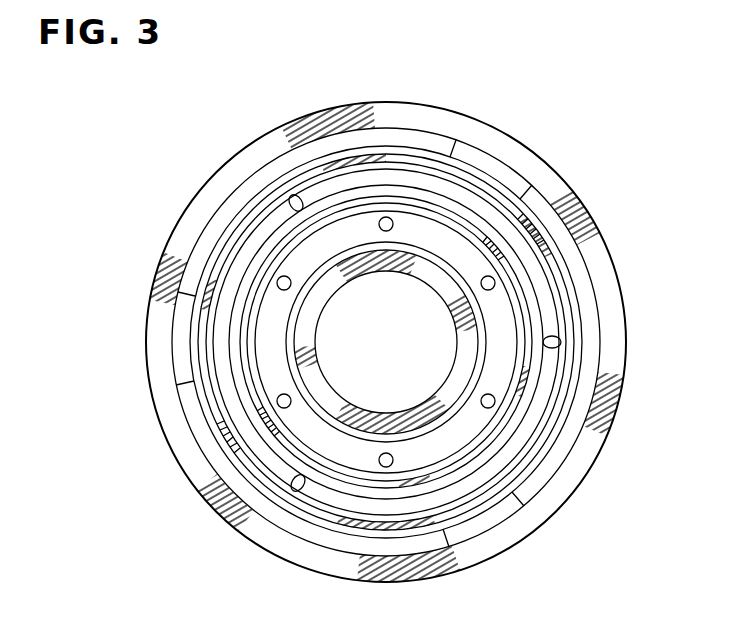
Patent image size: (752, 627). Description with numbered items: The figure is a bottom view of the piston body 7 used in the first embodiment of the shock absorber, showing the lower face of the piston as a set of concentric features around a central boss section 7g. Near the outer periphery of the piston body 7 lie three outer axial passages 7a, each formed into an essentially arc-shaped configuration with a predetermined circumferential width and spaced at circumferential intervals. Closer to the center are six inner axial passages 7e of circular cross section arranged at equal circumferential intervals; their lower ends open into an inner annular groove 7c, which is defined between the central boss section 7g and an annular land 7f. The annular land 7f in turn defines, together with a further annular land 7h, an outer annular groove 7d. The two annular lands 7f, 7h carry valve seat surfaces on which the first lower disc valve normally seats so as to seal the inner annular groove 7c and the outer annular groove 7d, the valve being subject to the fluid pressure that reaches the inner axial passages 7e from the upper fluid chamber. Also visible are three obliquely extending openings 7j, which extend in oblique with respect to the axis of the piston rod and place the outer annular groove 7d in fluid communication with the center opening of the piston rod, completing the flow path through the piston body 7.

The piston body 7 is at (607, 237).
The outer axial passage 7a is at (513, 178).
The inner annular groove 7c is at (352, 222).
The outer annular groove 7d is at (437, 180).
The inner axial passage 7e is at (387, 216).
The annular land 7f is at (248, 385).
The central boss section 7g is at (458, 347).
The annular land 7h is at (233, 460).
The obliquely extending opening 7j is at (290, 196).